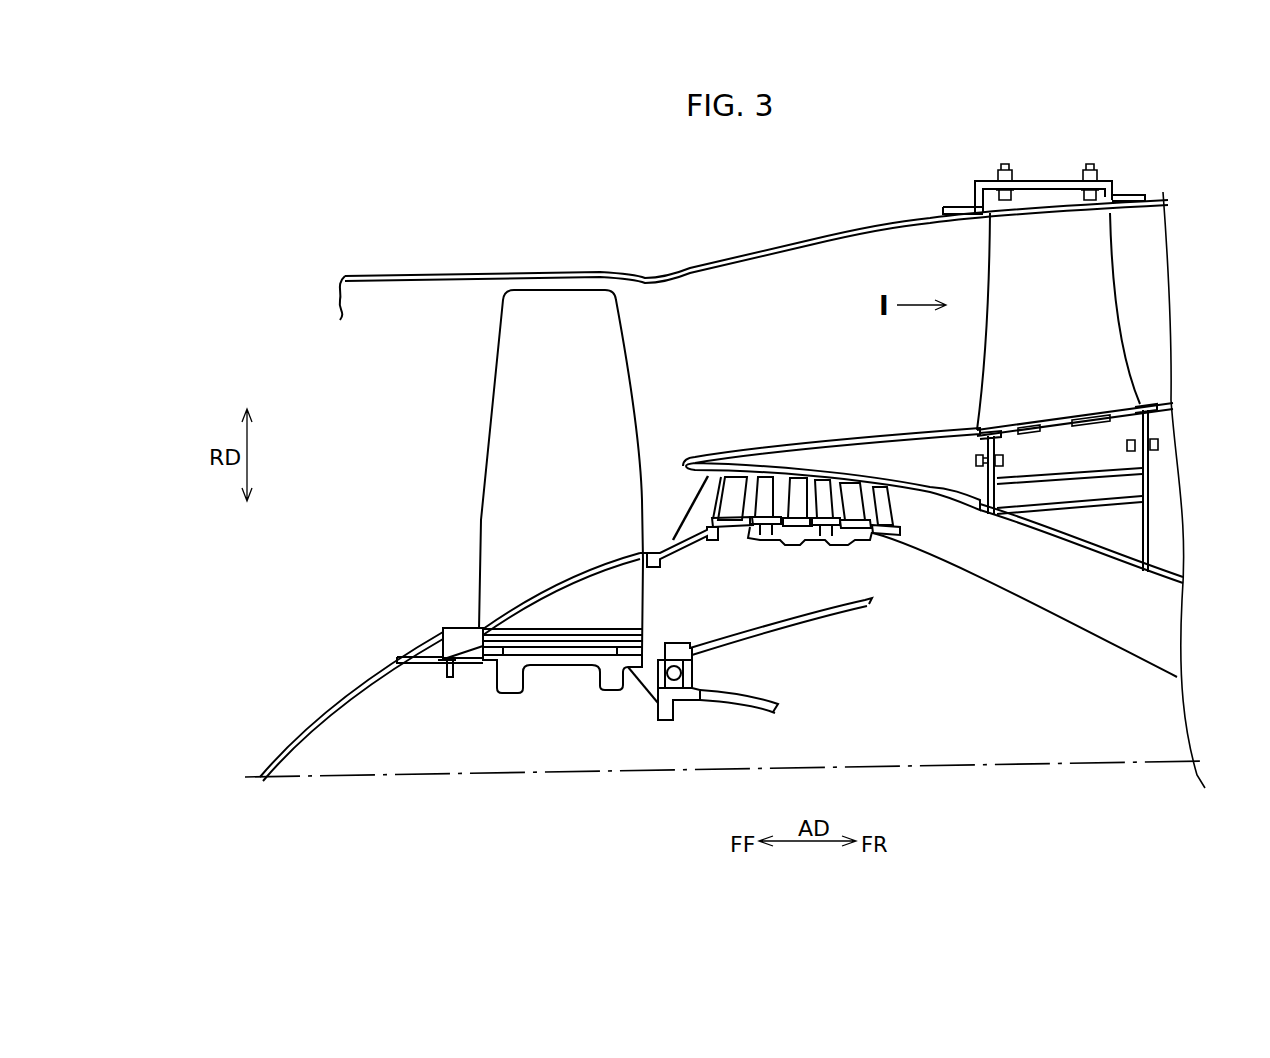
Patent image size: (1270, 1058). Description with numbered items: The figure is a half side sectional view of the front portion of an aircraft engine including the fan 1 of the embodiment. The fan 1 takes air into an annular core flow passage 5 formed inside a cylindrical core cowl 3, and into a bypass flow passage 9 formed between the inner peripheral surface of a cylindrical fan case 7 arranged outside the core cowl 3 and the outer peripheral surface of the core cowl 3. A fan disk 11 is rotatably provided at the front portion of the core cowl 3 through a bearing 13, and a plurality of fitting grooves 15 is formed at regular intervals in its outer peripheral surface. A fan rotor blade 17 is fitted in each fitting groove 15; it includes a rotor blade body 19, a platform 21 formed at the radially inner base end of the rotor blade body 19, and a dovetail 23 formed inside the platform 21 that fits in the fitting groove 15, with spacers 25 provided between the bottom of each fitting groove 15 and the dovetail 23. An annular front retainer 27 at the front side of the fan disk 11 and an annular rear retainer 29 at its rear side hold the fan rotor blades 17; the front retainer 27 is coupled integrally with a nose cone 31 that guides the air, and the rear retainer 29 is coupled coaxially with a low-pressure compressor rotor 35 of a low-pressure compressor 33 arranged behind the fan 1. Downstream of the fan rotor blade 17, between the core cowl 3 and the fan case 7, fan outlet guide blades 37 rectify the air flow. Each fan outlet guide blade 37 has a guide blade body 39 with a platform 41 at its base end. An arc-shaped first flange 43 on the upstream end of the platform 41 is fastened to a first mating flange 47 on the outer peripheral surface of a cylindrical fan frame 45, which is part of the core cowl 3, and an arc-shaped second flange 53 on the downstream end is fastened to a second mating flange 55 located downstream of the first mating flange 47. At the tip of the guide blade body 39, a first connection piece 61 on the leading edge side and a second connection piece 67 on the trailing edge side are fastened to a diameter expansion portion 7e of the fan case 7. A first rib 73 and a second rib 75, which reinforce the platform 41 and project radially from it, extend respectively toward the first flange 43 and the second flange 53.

The fan 1 is at (410, 481).
The core cowl 3 is at (921, 432).
The core flow passage 5 is at (925, 545).
The fan case 7 is at (808, 236).
The diameter expansion portion 7e is at (1036, 181).
The bypass flow passage 9 is at (895, 270).
The fan disk 11 is at (512, 698).
The bearing 13 is at (690, 673).
The fitting groove 15 is at (556, 653).
The fan rotor blade 17 is at (488, 431).
The rotor blade body 19 is at (571, 451).
The platform 21 is at (540, 585).
The dovetail 23 is at (592, 652).
The spacer 25 is at (490, 662).
The front retainer 27 is at (432, 647).
The rear retainer 29 is at (656, 640).
The nose cone 31 is at (330, 700).
The low-pressure compressor 33 is at (829, 470).
The low-pressure compressor rotor 35 is at (735, 545).
The fan outlet guide blade 37 is at (1126, 284).
The guide blade body 39 is at (1066, 317).
The platform 41 is at (1058, 414).
The first flange 43 is at (986, 448).
The fan frame 45 is at (1152, 538).
The first mating flange 47 is at (986, 489).
The second flange 53 is at (1144, 421).
The second mating flange 55 is at (1149, 490).
The first connection piece 61 is at (1007, 200).
The second connection piece 67 is at (1090, 200).
The first rib 73 is at (1021, 425).
The second rib 75 is at (1097, 419).